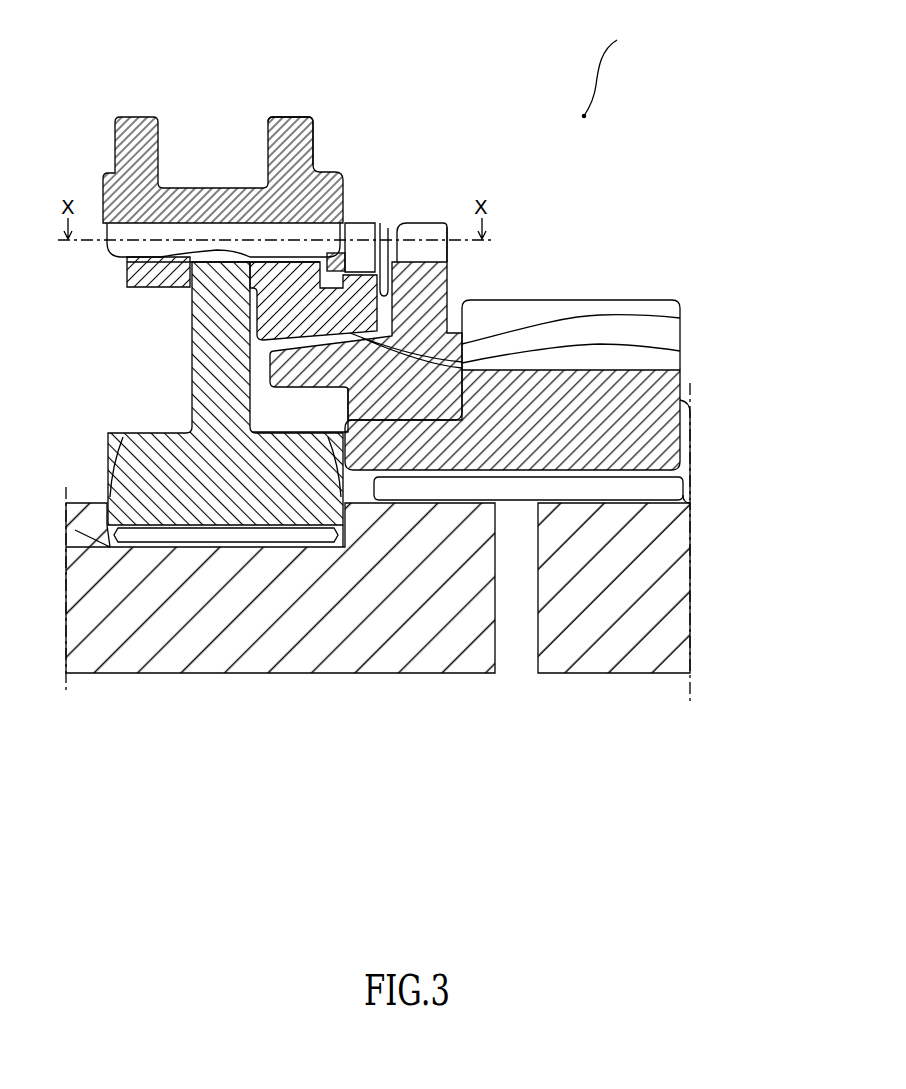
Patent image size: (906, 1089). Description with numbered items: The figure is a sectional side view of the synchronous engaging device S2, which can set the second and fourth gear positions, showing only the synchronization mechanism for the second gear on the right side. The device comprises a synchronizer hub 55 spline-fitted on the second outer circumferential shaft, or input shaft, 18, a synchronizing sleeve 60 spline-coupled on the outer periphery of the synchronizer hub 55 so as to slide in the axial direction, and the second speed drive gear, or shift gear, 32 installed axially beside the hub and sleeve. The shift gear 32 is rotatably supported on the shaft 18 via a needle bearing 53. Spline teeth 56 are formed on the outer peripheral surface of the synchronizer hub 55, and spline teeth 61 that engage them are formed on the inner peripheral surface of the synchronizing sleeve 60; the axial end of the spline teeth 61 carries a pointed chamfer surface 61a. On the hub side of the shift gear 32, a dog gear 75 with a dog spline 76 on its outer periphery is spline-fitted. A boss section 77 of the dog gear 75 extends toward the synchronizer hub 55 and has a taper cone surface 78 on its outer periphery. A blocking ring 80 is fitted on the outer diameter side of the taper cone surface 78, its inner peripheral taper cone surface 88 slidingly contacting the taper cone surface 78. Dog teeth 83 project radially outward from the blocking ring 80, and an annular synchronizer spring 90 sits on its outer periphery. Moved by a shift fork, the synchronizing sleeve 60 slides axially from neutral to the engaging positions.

The 2nd outer circumferential shaft 18 is at (652, 601).
The 2nd speed drive gear 32 is at (646, 299).
The needle bearing 53 is at (580, 490).
The synchronizer hub 55 is at (190, 366).
The spline teeth 56 is at (196, 189).
The synchronizing sleeve 60 is at (296, 115).
The spline teeth 61 is at (178, 261).
The chamfer surface 61a is at (341, 252).
The dog gear 75 is at (452, 285).
The dog spline 76 is at (445, 223).
The boss section 77 is at (300, 410).
The taper cone surface 78 is at (682, 351).
The blocking ring 80 is at (421, 224).
The dog tooth 83 is at (388, 228).
The taper cone surface 88 is at (682, 318).
The synchronizer spring 90 is at (374, 222).
The synchronous engaging device S2 is at (615, 69).